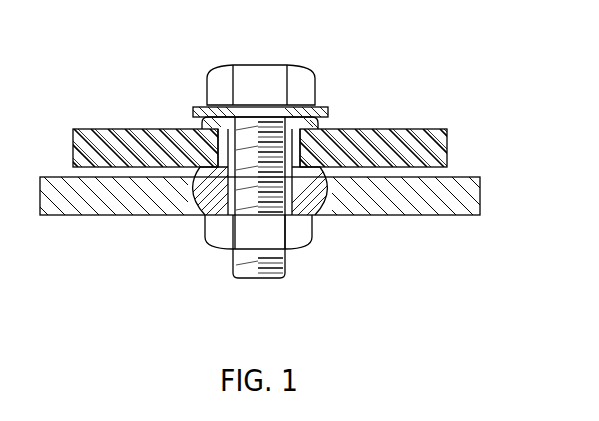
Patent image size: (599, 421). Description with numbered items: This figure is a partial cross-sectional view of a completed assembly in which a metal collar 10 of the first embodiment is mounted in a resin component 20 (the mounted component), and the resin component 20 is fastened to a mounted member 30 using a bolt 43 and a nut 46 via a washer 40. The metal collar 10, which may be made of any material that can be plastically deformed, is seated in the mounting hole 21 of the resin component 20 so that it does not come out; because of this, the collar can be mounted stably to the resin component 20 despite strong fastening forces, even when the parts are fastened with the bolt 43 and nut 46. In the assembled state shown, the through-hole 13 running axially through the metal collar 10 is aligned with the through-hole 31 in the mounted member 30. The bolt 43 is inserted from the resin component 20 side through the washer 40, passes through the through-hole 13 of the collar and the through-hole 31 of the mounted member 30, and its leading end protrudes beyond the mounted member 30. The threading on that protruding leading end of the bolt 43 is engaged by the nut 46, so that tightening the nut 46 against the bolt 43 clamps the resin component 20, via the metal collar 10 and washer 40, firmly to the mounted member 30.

The metal collar 10 is at (188, 168).
The through-hole 13 is at (230, 186).
The resin component 20 is at (413, 142).
The mounting hole 21 is at (301, 136).
The mounted member 30 is at (415, 198).
The through-hole 31 is at (237, 218).
The washer 40 is at (318, 108).
The bolt 43 is at (258, 80).
The nut 46 is at (302, 240).